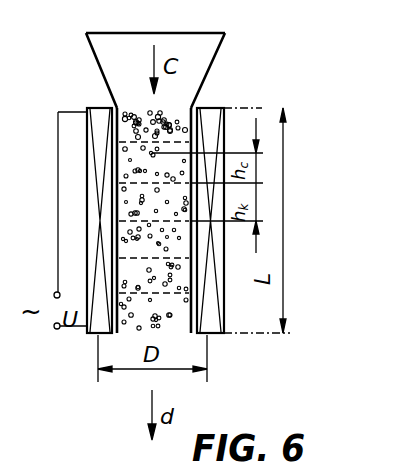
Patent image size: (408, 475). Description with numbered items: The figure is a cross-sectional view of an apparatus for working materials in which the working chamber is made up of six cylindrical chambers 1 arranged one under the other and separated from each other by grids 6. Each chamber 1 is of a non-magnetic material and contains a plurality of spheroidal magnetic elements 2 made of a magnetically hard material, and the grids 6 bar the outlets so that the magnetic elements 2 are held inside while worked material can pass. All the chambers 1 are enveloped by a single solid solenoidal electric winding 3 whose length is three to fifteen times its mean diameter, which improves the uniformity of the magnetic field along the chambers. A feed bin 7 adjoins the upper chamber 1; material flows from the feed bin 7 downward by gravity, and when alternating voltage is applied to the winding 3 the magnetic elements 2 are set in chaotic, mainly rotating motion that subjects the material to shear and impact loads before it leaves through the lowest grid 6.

The working chamber 1 is at (117, 153).
The magnetic elements 2 is at (117, 191).
The solenoidal electric winding 3 is at (90, 220).
The grid 6 is at (117, 292).
The feed bin 7 is at (97, 59).